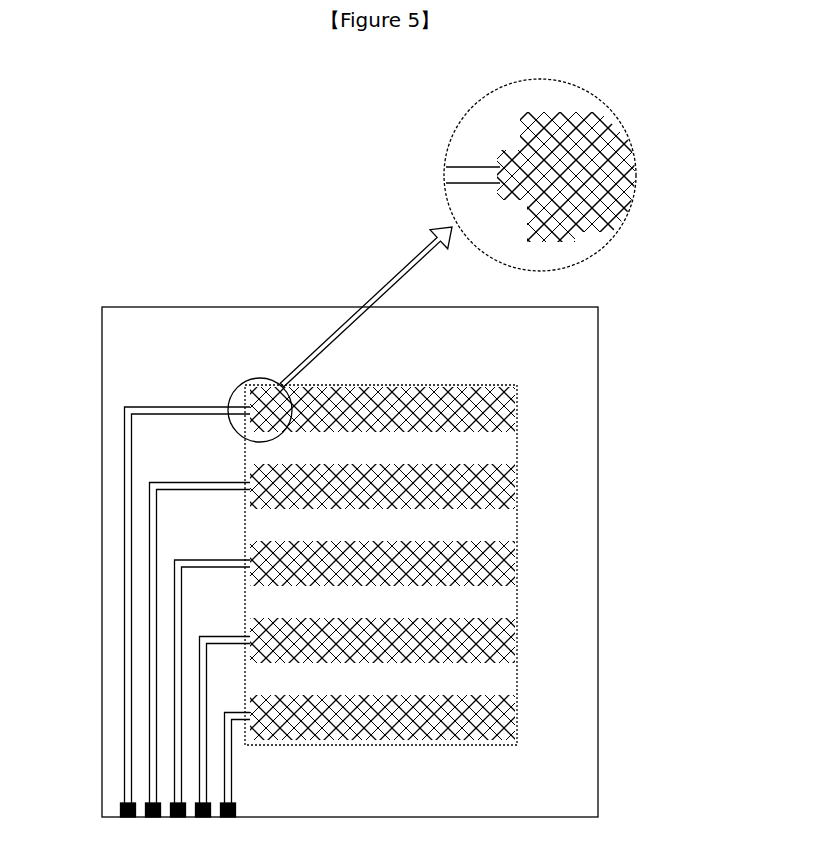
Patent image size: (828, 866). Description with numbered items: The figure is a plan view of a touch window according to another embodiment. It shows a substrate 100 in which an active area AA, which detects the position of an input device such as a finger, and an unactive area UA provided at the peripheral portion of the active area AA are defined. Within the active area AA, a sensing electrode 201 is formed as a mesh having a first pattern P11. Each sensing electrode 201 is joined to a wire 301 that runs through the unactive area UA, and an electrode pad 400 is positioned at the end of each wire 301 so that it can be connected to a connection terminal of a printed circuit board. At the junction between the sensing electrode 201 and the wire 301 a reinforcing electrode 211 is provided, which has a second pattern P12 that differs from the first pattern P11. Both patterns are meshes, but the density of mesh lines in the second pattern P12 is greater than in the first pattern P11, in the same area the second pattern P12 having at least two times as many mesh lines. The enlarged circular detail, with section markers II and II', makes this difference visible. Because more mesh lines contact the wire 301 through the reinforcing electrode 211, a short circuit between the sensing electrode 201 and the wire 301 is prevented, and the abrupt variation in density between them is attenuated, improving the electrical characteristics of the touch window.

The substrate 100 is at (225, 361).
The unactive area UA is at (580, 345).
The active area AA is at (517, 438).
The sensing electrode 201 is at (318, 392).
The reinforcing electrode 211 is at (259, 395).
The wire 301 is at (130, 450).
The electrode pad 400 is at (120, 808).
The first pattern P11 is at (636, 168).
The second pattern P12 is at (524, 118).
The section line II is at (578, 240).
The section line II' is at (649, 239).